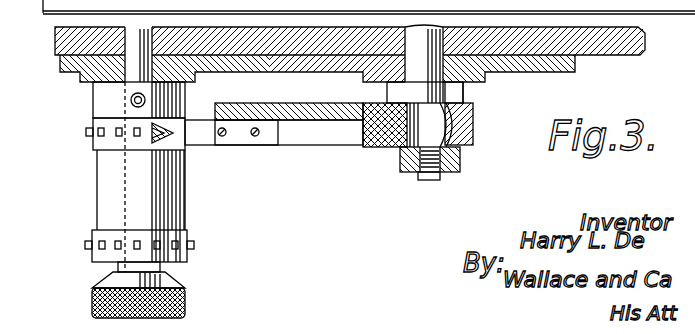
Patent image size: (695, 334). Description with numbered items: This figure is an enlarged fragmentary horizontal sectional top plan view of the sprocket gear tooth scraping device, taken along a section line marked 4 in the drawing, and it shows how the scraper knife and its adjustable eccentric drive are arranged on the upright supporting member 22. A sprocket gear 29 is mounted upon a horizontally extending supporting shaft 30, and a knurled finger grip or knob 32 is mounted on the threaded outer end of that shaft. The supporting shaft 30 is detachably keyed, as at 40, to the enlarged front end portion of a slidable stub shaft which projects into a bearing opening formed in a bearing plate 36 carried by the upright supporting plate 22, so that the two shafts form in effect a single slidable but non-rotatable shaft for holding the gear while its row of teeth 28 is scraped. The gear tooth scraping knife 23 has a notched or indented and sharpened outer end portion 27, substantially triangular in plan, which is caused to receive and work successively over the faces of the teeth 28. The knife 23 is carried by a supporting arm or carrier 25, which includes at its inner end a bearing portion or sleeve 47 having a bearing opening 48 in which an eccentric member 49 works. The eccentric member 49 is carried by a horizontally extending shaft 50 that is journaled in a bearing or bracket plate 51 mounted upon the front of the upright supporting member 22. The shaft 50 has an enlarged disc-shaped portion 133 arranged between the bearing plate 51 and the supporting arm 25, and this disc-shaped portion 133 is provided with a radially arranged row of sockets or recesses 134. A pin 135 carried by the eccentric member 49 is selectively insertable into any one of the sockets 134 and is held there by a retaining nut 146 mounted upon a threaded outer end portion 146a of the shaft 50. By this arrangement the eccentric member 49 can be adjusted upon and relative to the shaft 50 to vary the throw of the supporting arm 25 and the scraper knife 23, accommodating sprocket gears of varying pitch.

The upright supporting member 22 is at (643, 47).
The supporting shaft 30 is at (132, 65).
The bearing plate 36 is at (232, 73).
The bearing plate 51 is at (576, 67).
The shaft 50 is at (447, 29).
The sprocket gear 29 is at (103, 180).
The notched outer end portion 27 is at (170, 165).
The key 40 is at (146, 99).
The teeth 28 is at (90, 133).
The knurled knob 32 is at (186, 297).
The supporting arm 25 is at (308, 133).
The gear tooth scraping knife 23 is at (213, 145).
The sockets 134 is at (367, 118).
The eccentric member 49 is at (382, 150).
The section line 4- 4 is at (394, 88).
The disc-shaped portion 133 is at (458, 98).
The bearing sleeve 47 is at (473, 133).
The bearing opening 48 is at (474, 143).
The pin 135 is at (461, 172).
The retaining nut 146 is at (400, 166).
The threaded outer end portion 146a is at (430, 180).